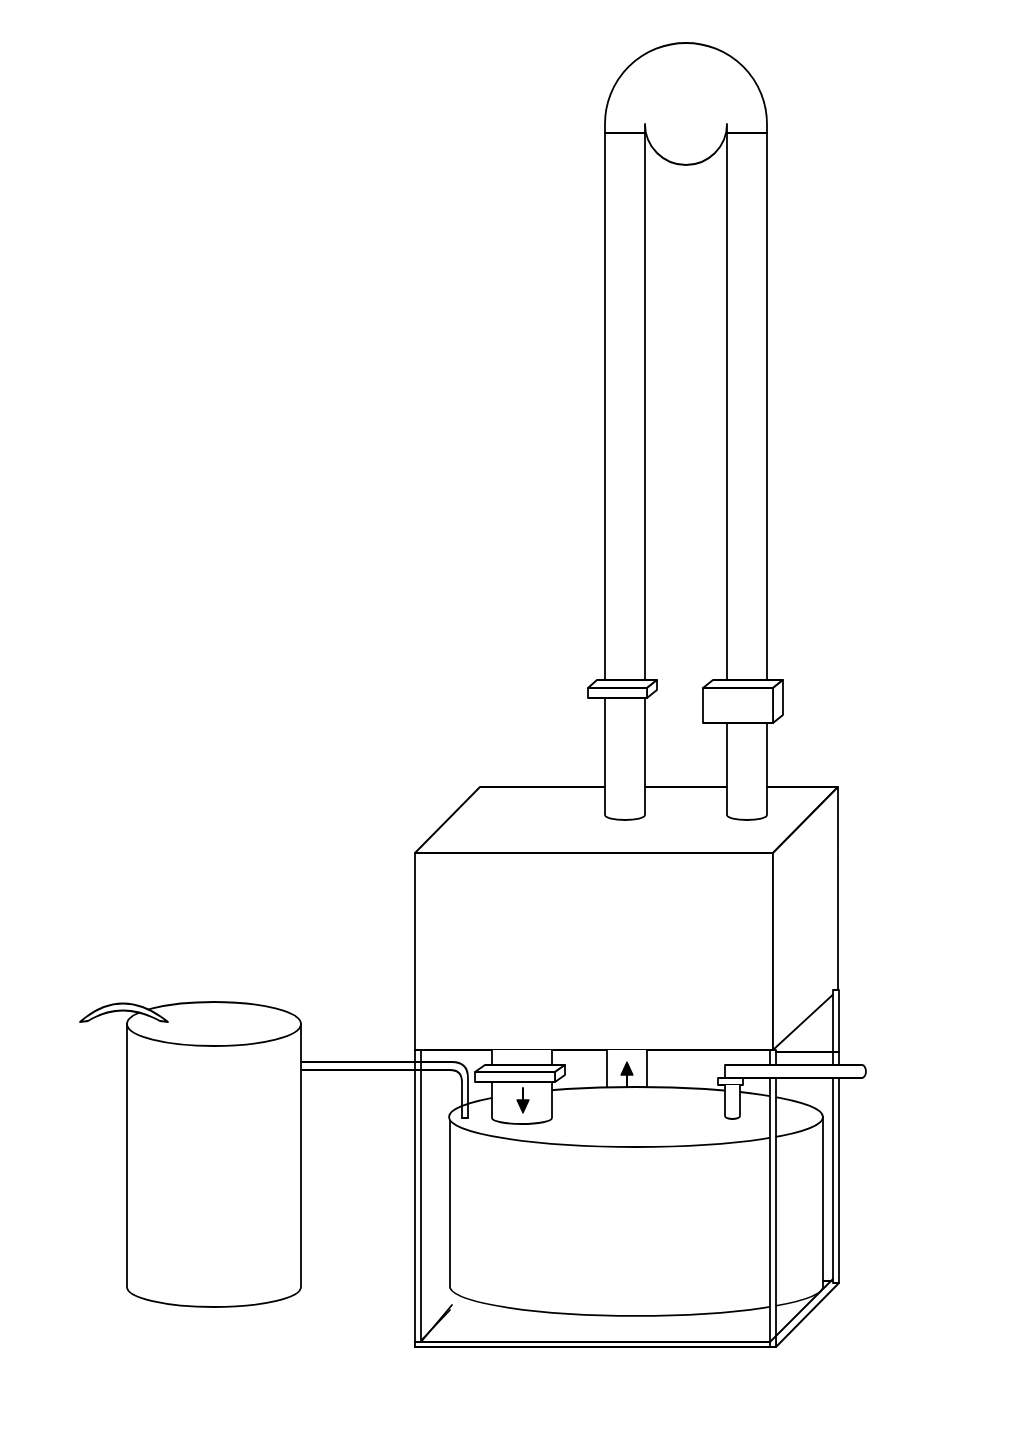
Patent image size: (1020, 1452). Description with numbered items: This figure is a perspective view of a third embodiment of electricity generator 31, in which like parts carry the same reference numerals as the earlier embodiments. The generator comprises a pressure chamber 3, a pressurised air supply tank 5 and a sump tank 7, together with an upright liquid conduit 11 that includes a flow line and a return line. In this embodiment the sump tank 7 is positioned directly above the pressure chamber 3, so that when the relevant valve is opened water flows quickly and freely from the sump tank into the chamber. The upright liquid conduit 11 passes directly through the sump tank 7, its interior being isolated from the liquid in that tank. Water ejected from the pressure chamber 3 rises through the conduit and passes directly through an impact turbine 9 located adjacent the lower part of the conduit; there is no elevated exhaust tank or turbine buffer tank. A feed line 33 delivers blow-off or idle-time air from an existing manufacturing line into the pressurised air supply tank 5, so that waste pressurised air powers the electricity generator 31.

The electricity generator 31 is at (204, 246).
The upright liquid conduit 11 is at (531, 268).
The impact turbine 9 is at (783, 681).
The sump tank 7 is at (790, 808).
The pressure chamber 3 is at (553, 1257).
The pressurised air supply tank 5 is at (170, 1138).
The feed line 33 is at (105, 1006).